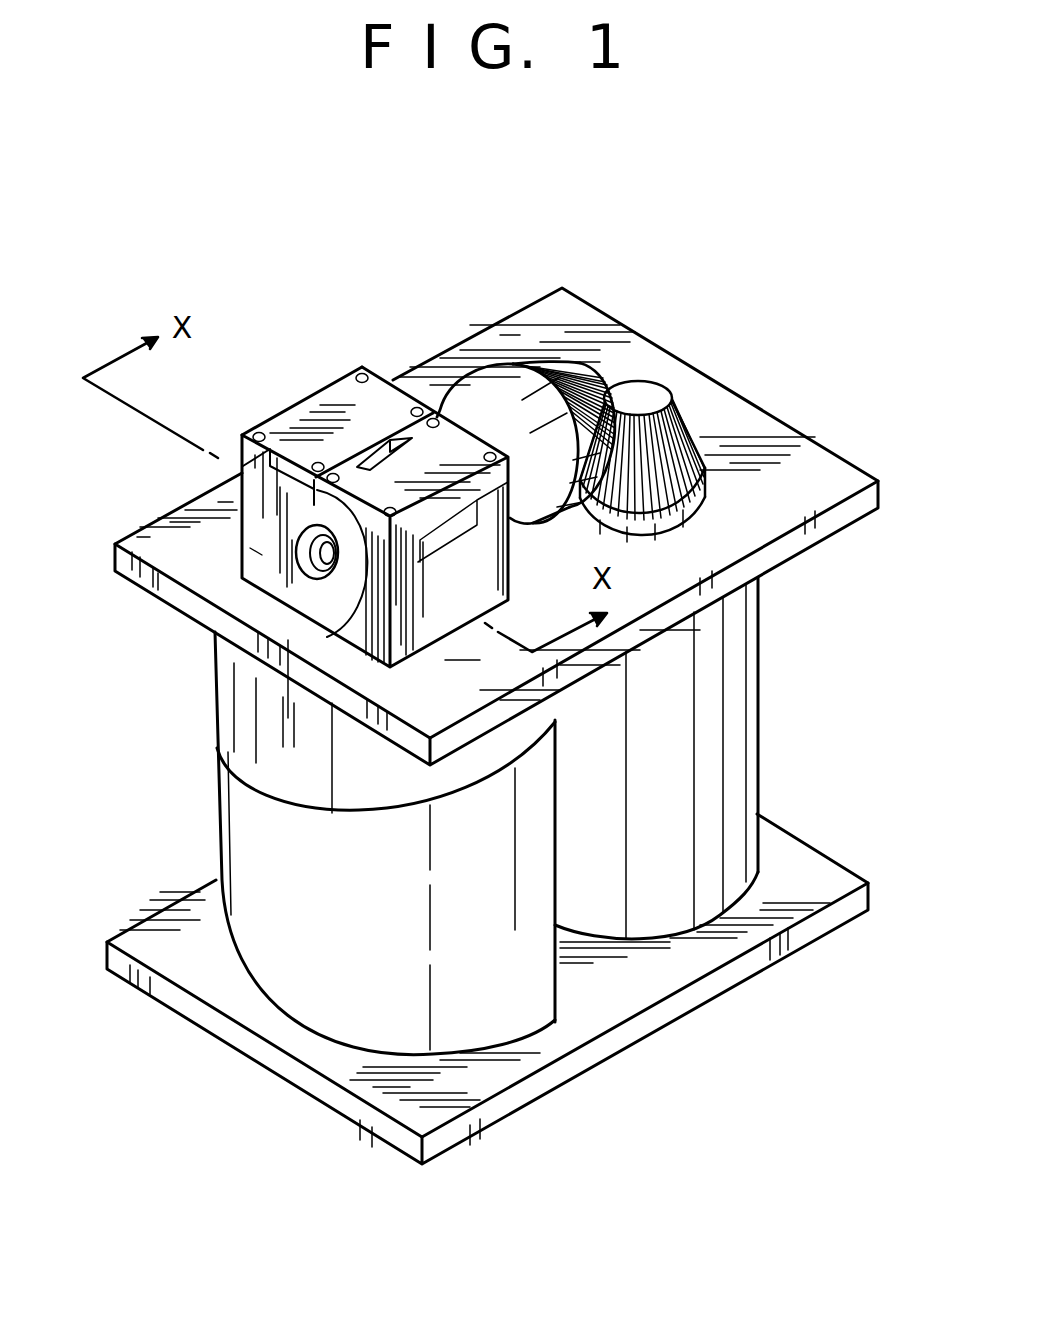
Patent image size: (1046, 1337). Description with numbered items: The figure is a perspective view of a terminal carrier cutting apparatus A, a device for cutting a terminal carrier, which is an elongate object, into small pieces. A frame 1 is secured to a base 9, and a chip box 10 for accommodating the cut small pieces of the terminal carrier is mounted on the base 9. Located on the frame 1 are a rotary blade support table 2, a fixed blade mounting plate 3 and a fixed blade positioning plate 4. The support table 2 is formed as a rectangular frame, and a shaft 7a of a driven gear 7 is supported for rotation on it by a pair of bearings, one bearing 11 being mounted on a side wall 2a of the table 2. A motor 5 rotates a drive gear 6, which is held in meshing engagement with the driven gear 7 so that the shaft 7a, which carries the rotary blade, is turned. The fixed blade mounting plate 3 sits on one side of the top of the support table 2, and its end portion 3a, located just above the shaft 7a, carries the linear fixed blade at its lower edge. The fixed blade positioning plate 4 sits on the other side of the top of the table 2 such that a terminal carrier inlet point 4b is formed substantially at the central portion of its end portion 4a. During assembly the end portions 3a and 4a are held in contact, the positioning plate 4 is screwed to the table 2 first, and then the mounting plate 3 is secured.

The terminal carrier cutting apparatus A is at (692, 320).
The frame 1 is at (793, 480).
The rotary blade support table 2 is at (413, 606).
The side wall 2a is at (252, 553).
The fixed blade mounting plate 3 is at (310, 417).
The end portion 3a is at (240, 473).
The fixed blade positioning plate 4 is at (450, 445).
The end portion 4a is at (355, 605).
The terminal carrier inlet point 4b is at (388, 445).
The motor 5 is at (725, 737).
The drive gear 6 is at (687, 420).
The driven gear 7 is at (557, 363).
The shaft 7a is at (312, 562).
The base 9 is at (785, 868).
The chip box 10 is at (285, 970).
The bearing 11 is at (298, 553).